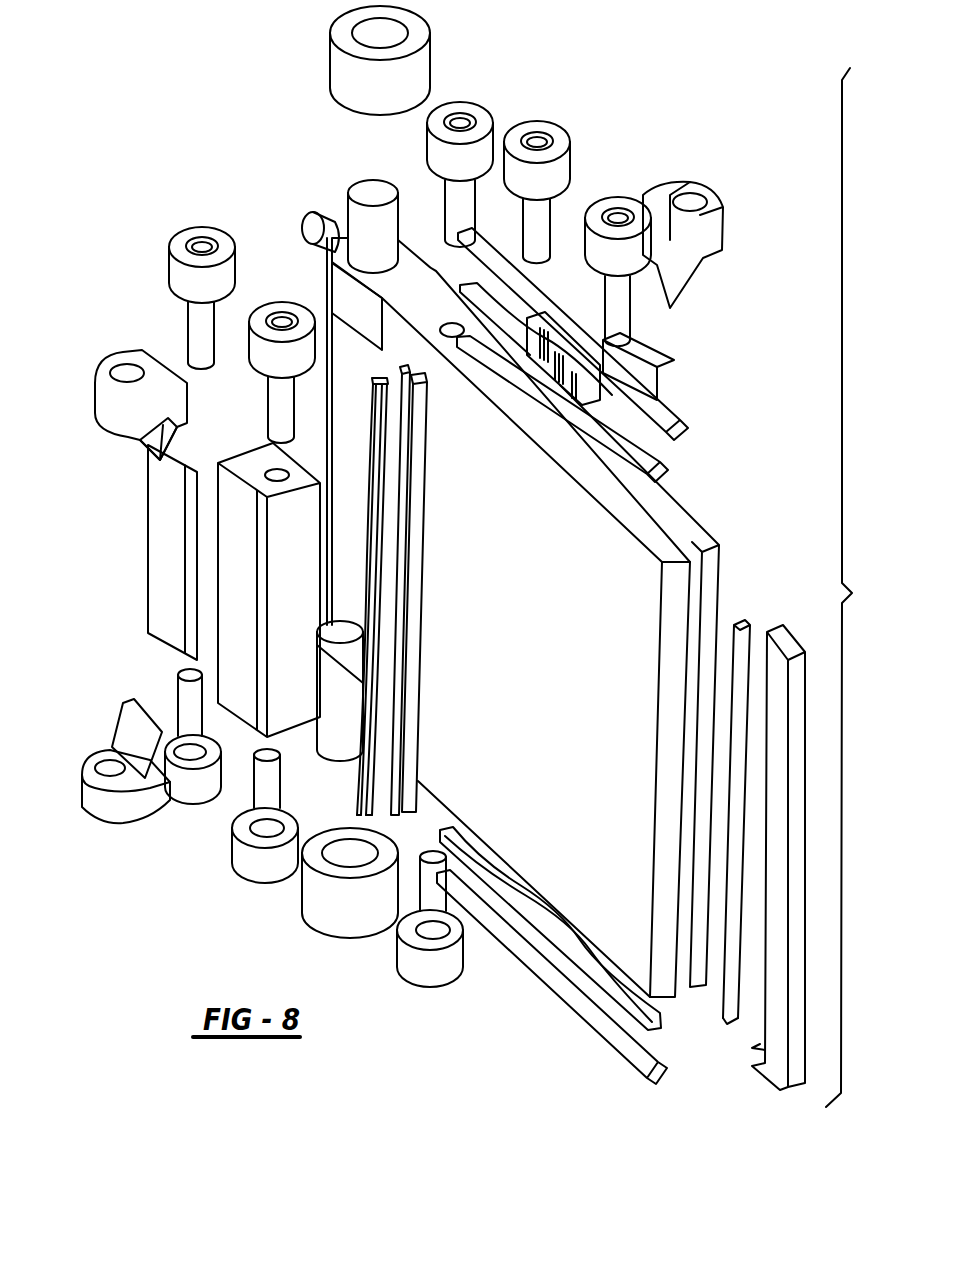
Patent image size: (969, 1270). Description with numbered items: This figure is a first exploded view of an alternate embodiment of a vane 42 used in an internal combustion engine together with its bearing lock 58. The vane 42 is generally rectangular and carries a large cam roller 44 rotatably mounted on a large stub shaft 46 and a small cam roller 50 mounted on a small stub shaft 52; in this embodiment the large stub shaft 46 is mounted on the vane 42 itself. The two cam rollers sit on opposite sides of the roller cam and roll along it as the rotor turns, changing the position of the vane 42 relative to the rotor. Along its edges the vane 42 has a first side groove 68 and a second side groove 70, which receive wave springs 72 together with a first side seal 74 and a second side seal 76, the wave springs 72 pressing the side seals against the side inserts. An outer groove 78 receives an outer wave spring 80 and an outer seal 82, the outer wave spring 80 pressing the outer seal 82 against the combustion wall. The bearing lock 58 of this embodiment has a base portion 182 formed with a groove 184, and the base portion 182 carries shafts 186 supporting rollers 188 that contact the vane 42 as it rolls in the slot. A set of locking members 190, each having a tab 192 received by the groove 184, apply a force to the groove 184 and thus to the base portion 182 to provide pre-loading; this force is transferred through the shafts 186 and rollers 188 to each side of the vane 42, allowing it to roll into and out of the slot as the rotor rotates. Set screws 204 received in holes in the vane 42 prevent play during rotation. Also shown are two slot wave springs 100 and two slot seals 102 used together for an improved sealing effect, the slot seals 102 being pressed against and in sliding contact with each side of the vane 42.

The vane 42 is at (852, 587).
The large cam roller 44 is at (342, 70).
The large stub shaft 46 is at (367, 217).
The small cam roller 50 is at (483, 117).
The small stub shaft 52 is at (458, 200).
The bearing lock 58 is at (127, 300).
The first side groove 68 is at (673, 538).
The second side groove 70 is at (678, 968).
The wave springs 72 is at (670, 463).
The first side seal 74 is at (688, 425).
The second side seal 76 is at (630, 1055).
The outer groove 78 is at (737, 1027).
The outer wave spring 80 is at (745, 627).
The outer seal 82 is at (787, 1087).
The slot wave spring 100 is at (367, 378).
The slot seal 102 is at (410, 352).
The base portion 182 is at (163, 598).
The groove 184 is at (208, 488).
The shafts 186 is at (198, 323).
The rollers 188 is at (180, 242).
The locking members 190 is at (100, 367).
The tab 192 is at (140, 447).
The set screws 204 is at (318, 218).